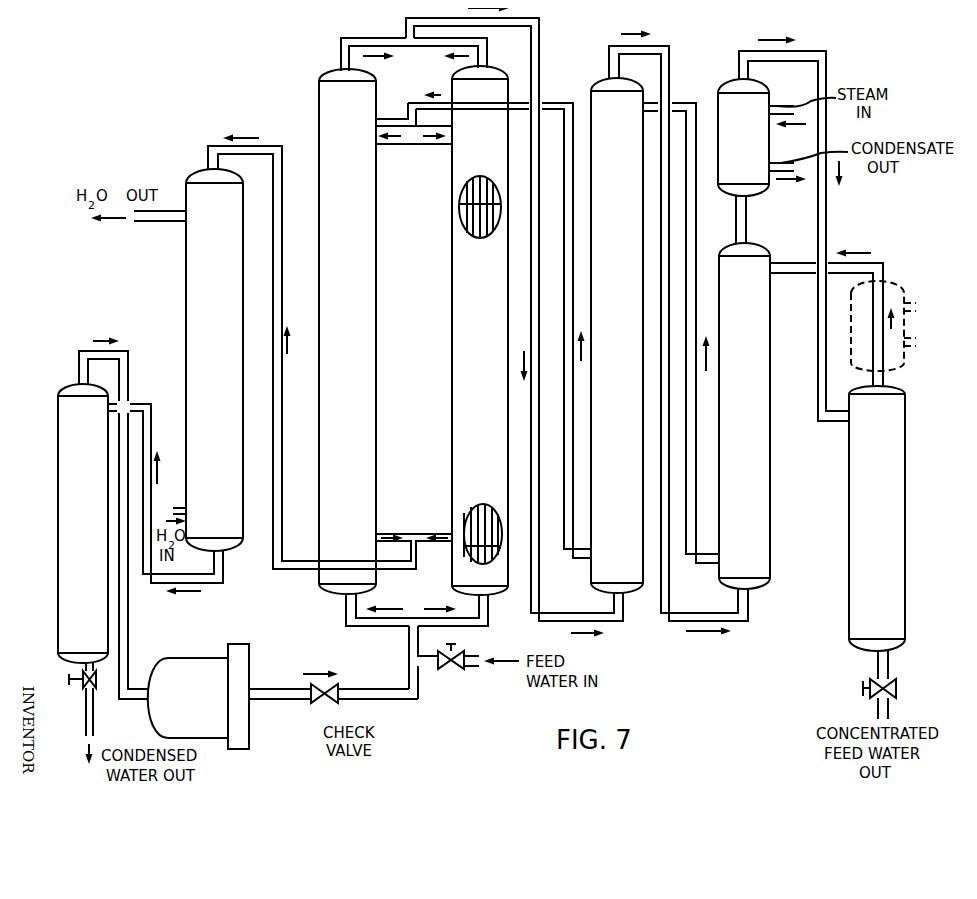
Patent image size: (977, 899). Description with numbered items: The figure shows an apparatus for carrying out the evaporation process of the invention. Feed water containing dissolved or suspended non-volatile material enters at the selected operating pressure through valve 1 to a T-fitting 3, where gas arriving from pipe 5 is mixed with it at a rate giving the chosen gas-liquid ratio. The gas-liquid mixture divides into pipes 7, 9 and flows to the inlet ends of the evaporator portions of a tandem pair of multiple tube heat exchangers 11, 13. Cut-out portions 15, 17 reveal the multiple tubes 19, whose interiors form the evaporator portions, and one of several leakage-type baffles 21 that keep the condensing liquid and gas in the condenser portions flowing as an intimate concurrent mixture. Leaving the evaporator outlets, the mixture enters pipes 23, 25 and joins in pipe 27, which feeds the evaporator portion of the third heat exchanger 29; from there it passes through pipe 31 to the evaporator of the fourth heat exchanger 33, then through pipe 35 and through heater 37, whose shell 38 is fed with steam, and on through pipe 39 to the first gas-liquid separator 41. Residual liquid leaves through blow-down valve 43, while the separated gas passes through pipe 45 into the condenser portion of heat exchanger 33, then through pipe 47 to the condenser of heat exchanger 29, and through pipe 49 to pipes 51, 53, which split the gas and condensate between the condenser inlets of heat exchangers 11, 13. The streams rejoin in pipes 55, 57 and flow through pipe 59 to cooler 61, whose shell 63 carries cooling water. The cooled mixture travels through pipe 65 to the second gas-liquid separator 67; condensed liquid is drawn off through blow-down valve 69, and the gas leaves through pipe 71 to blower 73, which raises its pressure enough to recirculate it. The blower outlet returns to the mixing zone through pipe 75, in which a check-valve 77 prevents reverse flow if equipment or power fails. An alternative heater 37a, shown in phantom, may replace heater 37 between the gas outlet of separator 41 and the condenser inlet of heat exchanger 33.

The valve 1 is at (458, 653).
The T-fitting 3 is at (408, 650).
The pipe 5 is at (388, 694).
The pipe 7 is at (363, 627).
The pipe 9 is at (440, 618).
The multiple tube heat exchanger 11 is at (353, 255).
The multiple tube heat exchanger 13 is at (488, 263).
The cut-out portion 15 is at (490, 503).
The cut-out portion 17 is at (462, 182).
The multiple tubes 19 is at (478, 233).
The baffle 21 is at (477, 210).
The pipe 23 is at (368, 35).
The pipe 25 is at (442, 45).
The pipe 27 is at (540, 33).
The third heat exchanger 29 is at (620, 248).
The pipe 31 is at (663, 75).
The fourth heat exchanger 33 is at (751, 321).
The pipe 35 is at (745, 225).
The heater 37 is at (727, 168).
The heater 37a is at (913, 316).
The shell 38 is at (715, 107).
The pipe 39 is at (848, 64).
The first gas-liquid separator 41 is at (905, 437).
The blow-down valve 43 is at (888, 685).
The pipe 45 is at (860, 265).
The pipe 47 is at (692, 225).
The pipe 49 is at (548, 100).
The pipe 51 is at (387, 117).
The pipe 53 is at (420, 125).
The pipe 55 is at (385, 532).
The pipe 57 is at (435, 532).
The pipe 59 is at (280, 463).
The cooler 61 is at (221, 262).
The shell 63 is at (185, 325).
The pipe 65 is at (222, 575).
The second gas-liquid separator 67 is at (57, 462).
The blow-down valve 69 is at (95, 677).
The pipe 71 is at (127, 622).
The blower 73 is at (198, 723).
The pipe 75 is at (263, 687).
The check-valve 77 is at (312, 703).